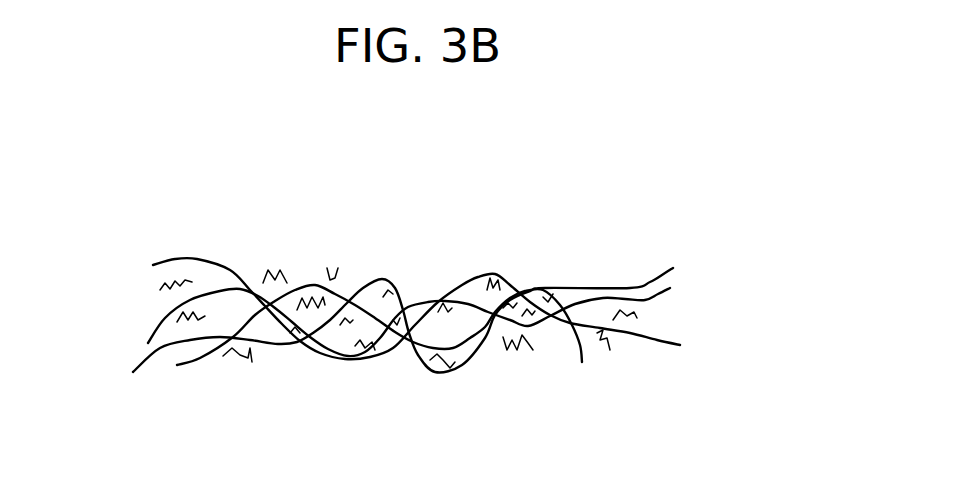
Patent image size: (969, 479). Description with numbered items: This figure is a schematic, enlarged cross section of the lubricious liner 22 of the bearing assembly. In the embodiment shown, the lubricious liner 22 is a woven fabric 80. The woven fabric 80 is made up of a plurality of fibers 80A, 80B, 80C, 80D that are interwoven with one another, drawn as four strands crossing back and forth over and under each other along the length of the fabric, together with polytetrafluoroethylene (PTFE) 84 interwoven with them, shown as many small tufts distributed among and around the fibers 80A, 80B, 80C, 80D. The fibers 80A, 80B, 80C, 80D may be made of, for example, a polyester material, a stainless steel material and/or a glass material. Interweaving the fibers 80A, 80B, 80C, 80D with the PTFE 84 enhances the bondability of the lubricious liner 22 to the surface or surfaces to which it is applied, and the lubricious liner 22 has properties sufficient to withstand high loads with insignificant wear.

The lubricious liner 22 is at (683, 173).
The woven fabric 80 is at (119, 308).
The fiber 80A is at (620, 287).
The fiber 80B is at (433, 318).
The fiber 80C is at (656, 339).
The fiber 80D is at (582, 362).
The polytetrafluoroethylene (PTFE) 84 is at (182, 273).